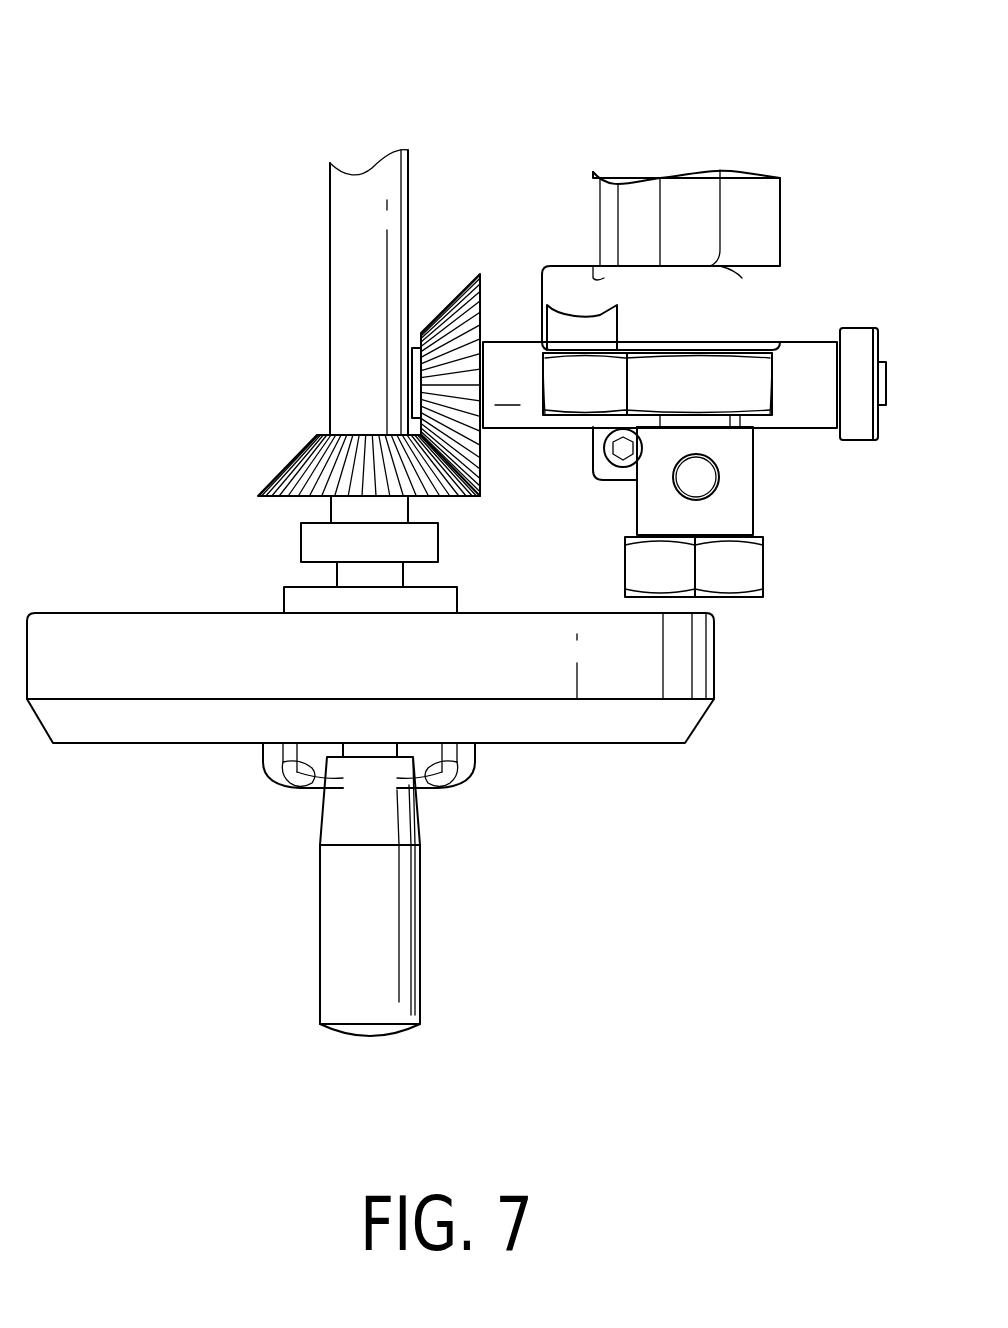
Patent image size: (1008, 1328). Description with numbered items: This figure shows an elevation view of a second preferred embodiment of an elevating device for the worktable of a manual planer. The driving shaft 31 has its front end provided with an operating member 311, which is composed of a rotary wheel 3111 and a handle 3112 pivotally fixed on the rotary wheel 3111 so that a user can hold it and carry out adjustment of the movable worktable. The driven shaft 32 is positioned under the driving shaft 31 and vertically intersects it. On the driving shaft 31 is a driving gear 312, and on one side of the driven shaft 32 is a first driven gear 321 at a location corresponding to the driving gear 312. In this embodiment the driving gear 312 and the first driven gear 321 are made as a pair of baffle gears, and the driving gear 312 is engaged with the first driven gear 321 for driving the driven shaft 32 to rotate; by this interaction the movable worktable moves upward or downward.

The driving shaft 31 is at (347, 219).
The driving gear 312 is at (286, 465).
The first driven gear 321 is at (453, 300).
The driven shaft 32 is at (805, 355).
The operating member 311 is at (468, 778).
The rotary wheel 3111 is at (311, 775).
The handle 3112 is at (397, 963).